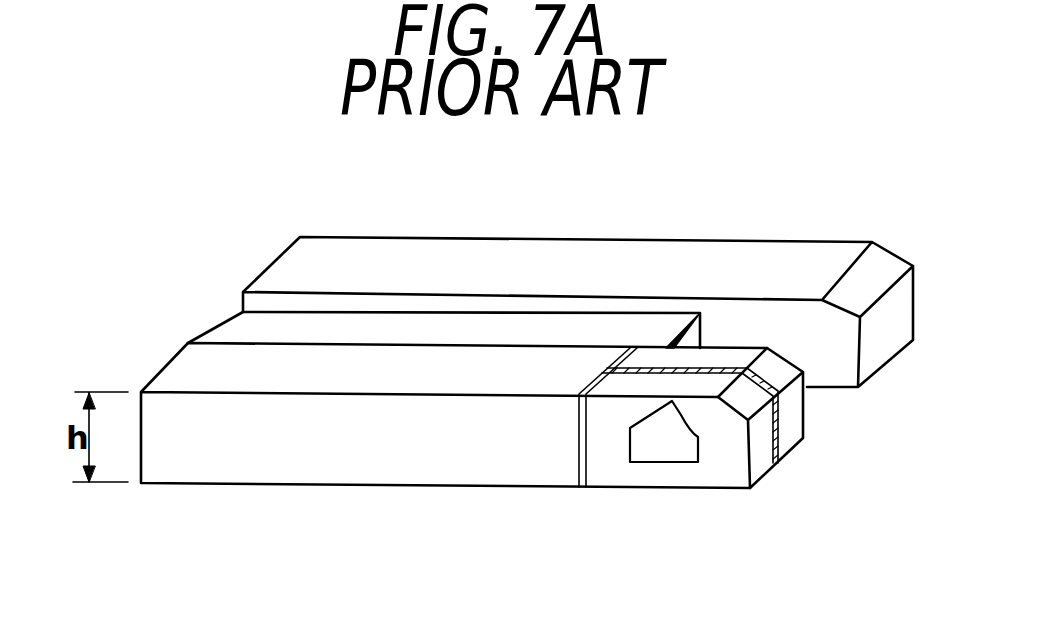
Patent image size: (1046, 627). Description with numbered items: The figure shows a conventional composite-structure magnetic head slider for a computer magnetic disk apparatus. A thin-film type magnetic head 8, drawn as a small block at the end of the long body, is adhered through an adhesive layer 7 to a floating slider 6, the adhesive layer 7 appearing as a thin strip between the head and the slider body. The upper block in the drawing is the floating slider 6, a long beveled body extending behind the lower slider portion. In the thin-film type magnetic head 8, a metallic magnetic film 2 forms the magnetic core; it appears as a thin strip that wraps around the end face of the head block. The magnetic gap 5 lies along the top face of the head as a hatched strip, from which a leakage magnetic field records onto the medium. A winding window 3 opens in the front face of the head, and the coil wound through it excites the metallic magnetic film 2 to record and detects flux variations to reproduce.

The metallic magnetic film 2 is at (780, 432).
The winding window 3 is at (663, 447).
The magnetic gap 5 is at (708, 368).
The floating slider 6 is at (505, 260).
The adhesive layer 7 is at (580, 445).
The thin-film type magnetic head 8 is at (708, 468).